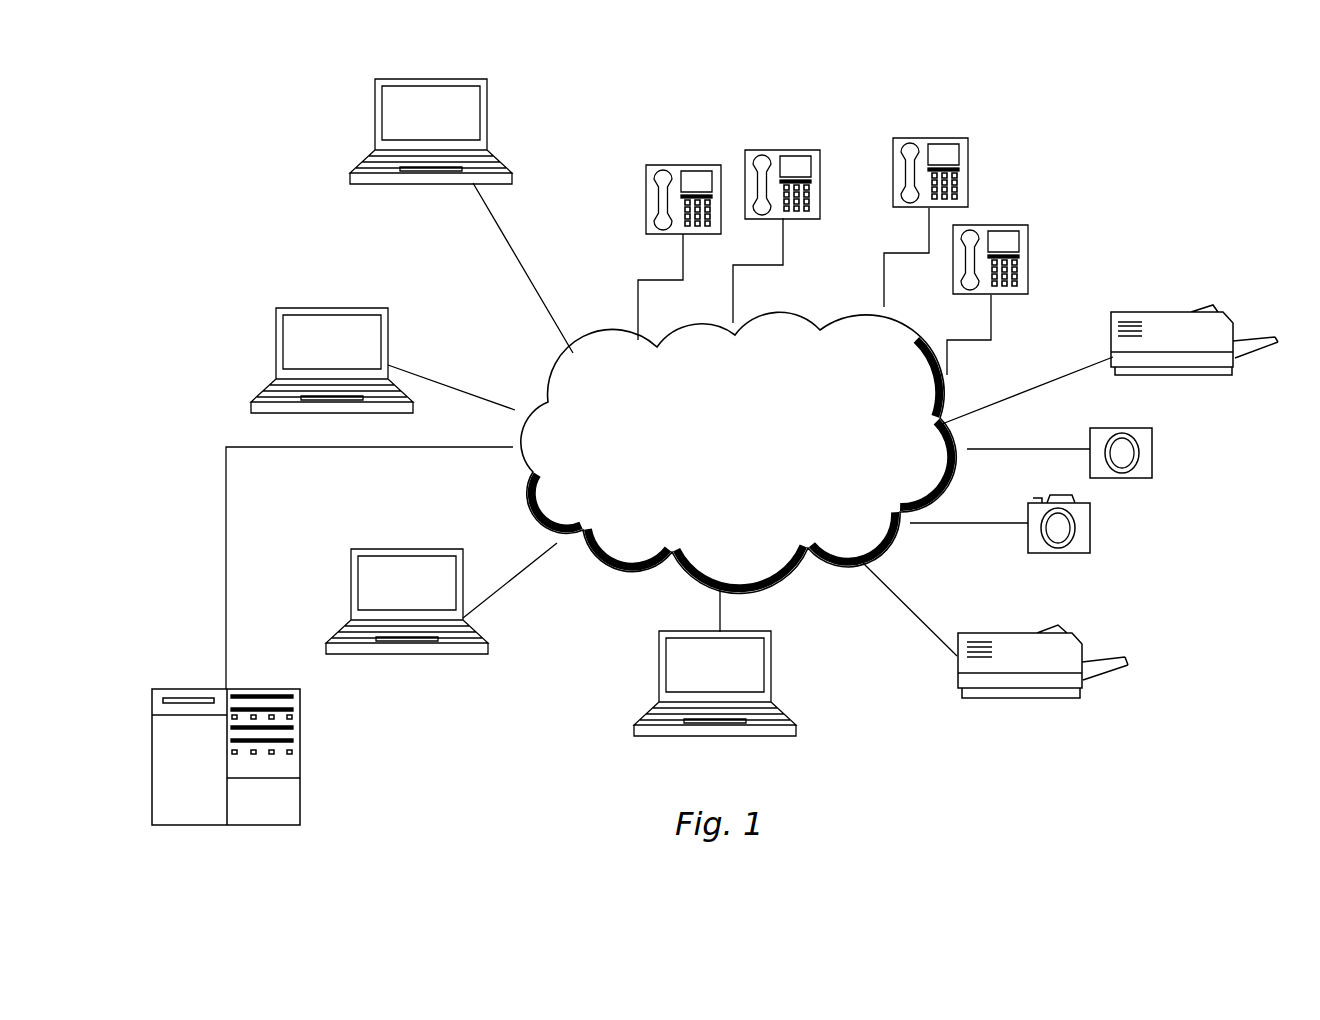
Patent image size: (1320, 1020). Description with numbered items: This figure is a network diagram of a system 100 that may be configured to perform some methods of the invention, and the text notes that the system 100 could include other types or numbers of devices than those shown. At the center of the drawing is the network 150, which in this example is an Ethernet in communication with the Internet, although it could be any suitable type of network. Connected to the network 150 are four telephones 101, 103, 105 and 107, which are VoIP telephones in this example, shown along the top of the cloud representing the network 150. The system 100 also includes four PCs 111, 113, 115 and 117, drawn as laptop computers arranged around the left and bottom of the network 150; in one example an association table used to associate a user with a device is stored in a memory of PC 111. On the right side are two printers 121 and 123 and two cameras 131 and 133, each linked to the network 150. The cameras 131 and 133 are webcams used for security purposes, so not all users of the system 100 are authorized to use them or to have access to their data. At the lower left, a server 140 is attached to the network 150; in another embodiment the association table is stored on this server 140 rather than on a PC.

The system 100 is at (1118, 139).
The telephone 101 is at (667, 165).
The telephone 103 is at (763, 148).
The telephone 105 is at (925, 137).
The telephone 107 is at (1023, 238).
The PC 111 is at (473, 103).
The PC 113 is at (377, 320).
The PC 115 is at (432, 562).
The PC 117 is at (783, 722).
The printer 121 is at (1182, 322).
The printer 123 is at (1082, 645).
The camera 131 is at (1142, 443).
The camera 133 is at (1077, 529).
The server 140 is at (255, 695).
The network 150 is at (616, 597).